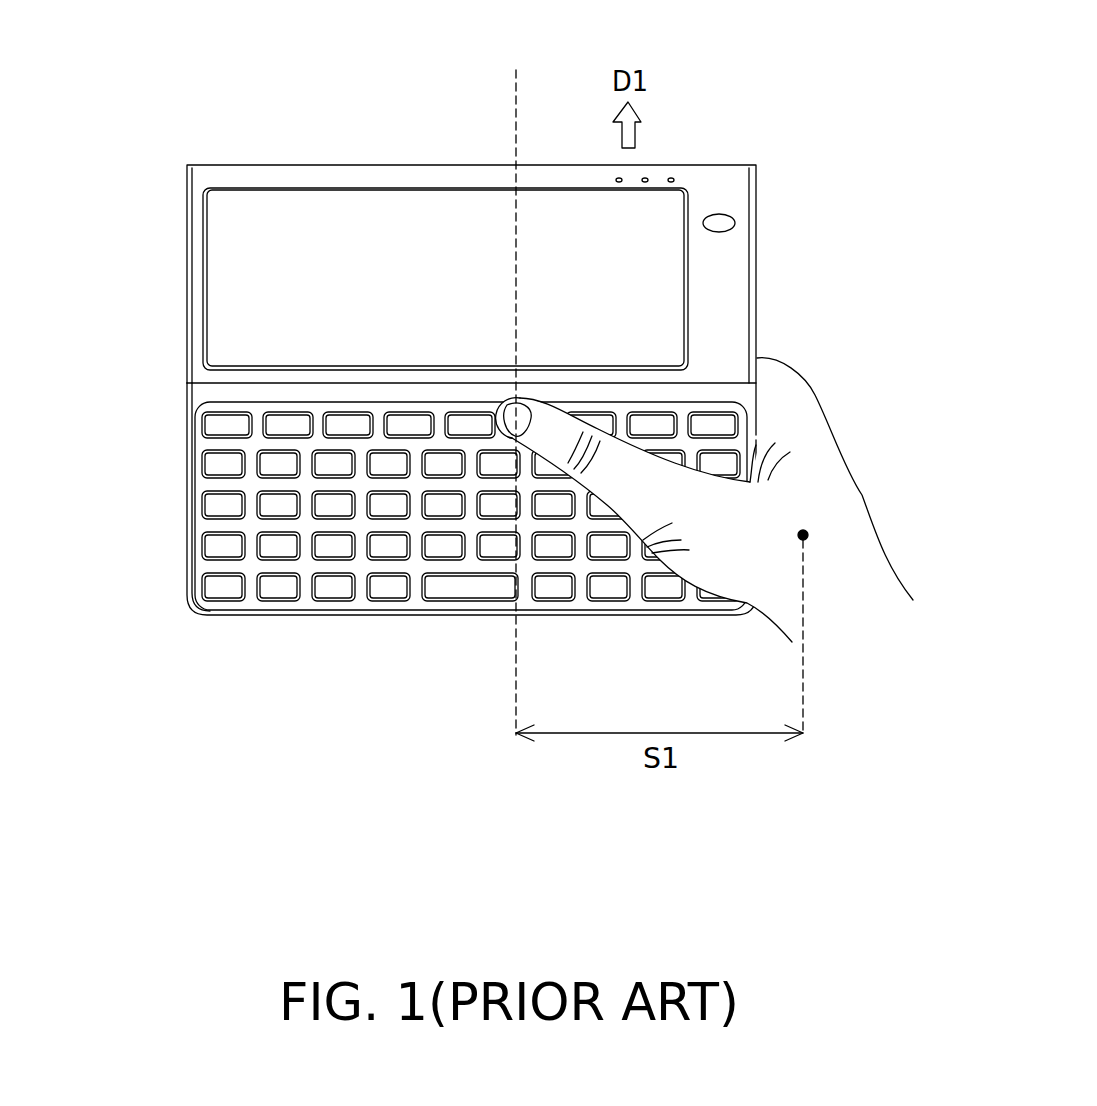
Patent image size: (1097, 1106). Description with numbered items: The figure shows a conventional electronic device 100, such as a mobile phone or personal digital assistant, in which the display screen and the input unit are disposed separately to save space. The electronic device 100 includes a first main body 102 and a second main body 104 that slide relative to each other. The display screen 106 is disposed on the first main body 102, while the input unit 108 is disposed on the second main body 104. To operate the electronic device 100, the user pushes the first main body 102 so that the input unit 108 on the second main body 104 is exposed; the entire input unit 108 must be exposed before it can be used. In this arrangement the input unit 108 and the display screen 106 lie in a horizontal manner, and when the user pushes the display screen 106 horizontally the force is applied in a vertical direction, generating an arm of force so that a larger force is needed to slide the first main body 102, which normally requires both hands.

The electronic device 100 is at (913, 43).
The first main body 102 is at (307, 173).
The second main body 104 is at (200, 488).
The display screen 106 is at (397, 200).
The input unit 108 is at (217, 425).